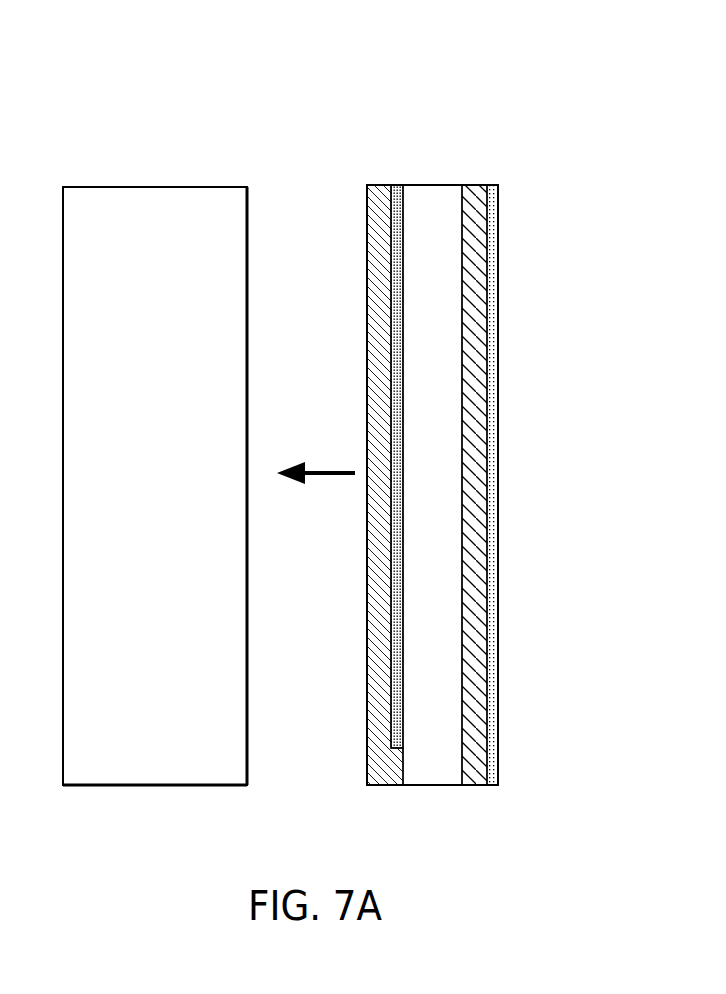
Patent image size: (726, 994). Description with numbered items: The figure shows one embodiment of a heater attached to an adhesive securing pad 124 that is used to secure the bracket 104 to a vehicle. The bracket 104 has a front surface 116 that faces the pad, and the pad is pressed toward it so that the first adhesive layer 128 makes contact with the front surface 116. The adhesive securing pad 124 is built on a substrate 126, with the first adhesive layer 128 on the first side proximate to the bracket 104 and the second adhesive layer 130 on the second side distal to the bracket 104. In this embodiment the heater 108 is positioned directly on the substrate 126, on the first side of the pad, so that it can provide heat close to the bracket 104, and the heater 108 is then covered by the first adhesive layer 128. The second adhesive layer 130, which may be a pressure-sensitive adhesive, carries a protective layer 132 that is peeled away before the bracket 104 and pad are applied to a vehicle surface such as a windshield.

The bracket 104 is at (155, 486).
The front surface 116 is at (248, 207).
The adhesive securing pad 124 is at (457, 431).
The substrate 126 is at (432, 740).
The first adhesive layer 128 is at (383, 185).
The heater 108 is at (396, 185).
The second adhesive layer 130 is at (475, 185).
The protective layer 132 is at (500, 767).